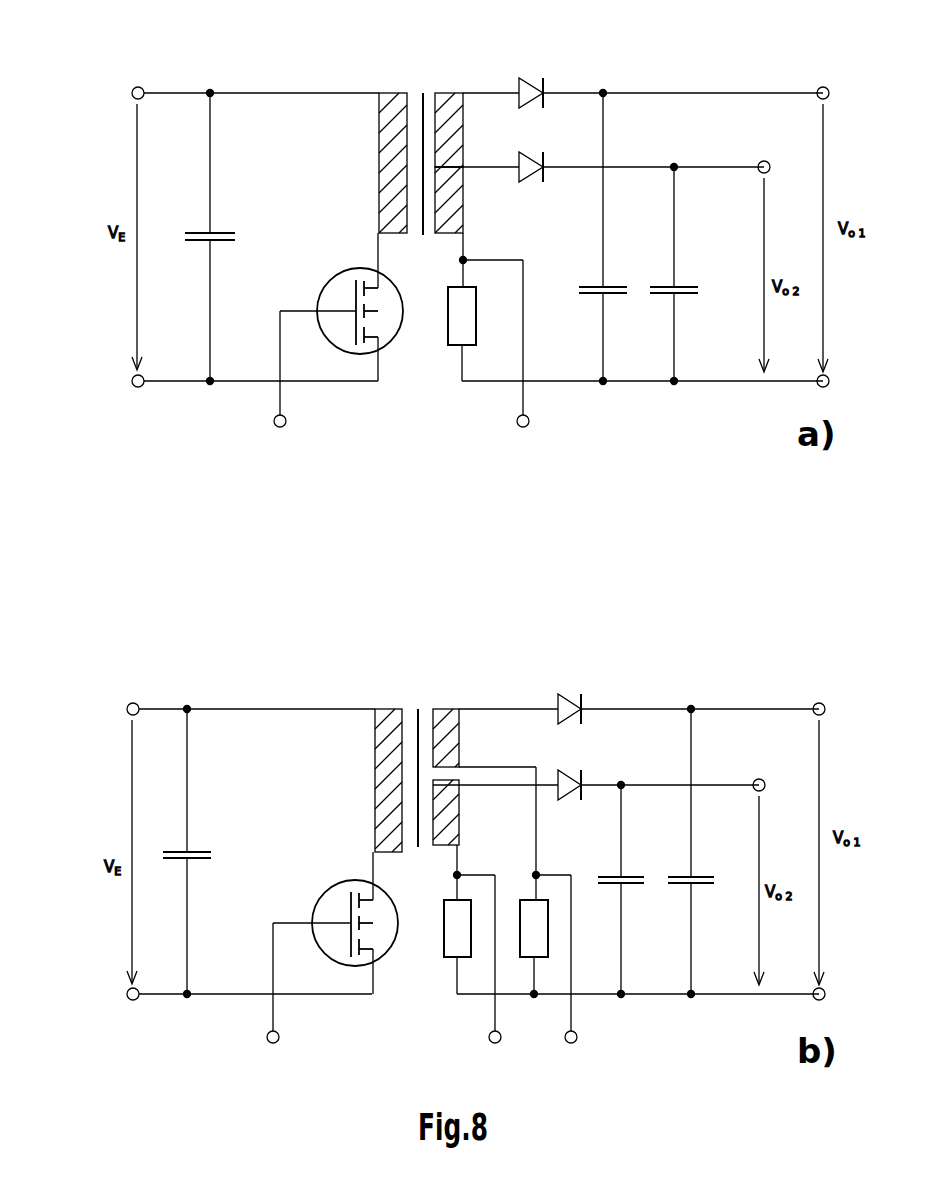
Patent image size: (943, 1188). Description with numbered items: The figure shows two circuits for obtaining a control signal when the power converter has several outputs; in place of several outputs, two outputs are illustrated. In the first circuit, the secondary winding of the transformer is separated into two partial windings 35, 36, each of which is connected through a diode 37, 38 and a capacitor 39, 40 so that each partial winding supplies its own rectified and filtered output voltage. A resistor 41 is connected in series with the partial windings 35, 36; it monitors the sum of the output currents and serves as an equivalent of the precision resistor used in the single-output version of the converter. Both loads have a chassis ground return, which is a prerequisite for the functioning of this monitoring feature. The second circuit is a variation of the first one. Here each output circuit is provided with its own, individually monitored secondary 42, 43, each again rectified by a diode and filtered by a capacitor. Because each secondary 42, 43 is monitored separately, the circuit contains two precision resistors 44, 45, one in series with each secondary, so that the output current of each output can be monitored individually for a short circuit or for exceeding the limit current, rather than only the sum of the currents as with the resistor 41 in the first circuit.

In FIG. 8a, the partial winding 35 is at (443, 202).
In FIG. 8a, the partial winding 36 is at (458, 100).
In FIG. 8a, the diode 37 is at (529, 86).
In FIG. 8a, the diode 38 is at (531, 165).
In FIG. 8a, the capacitor 39 is at (674, 287).
In FIG. 8a, the capacitor 40 is at (603, 287).
In FIG. 8a, the resistor 41 is at (460, 333).
In FIG. 8b, the secondary 42 is at (441, 722).
In FIG. 8b, the secondary 43 is at (460, 785).
In FIG. 8b, the precision resistor 44 is at (543, 957).
In FIG. 8b, the precision resistor 45 is at (455, 942).